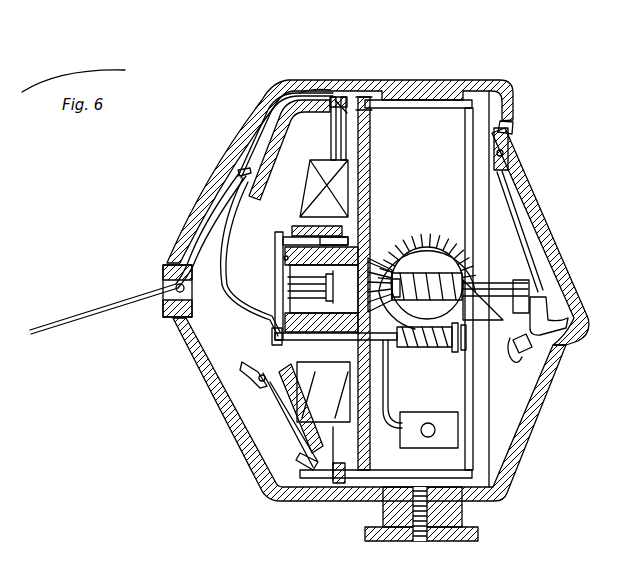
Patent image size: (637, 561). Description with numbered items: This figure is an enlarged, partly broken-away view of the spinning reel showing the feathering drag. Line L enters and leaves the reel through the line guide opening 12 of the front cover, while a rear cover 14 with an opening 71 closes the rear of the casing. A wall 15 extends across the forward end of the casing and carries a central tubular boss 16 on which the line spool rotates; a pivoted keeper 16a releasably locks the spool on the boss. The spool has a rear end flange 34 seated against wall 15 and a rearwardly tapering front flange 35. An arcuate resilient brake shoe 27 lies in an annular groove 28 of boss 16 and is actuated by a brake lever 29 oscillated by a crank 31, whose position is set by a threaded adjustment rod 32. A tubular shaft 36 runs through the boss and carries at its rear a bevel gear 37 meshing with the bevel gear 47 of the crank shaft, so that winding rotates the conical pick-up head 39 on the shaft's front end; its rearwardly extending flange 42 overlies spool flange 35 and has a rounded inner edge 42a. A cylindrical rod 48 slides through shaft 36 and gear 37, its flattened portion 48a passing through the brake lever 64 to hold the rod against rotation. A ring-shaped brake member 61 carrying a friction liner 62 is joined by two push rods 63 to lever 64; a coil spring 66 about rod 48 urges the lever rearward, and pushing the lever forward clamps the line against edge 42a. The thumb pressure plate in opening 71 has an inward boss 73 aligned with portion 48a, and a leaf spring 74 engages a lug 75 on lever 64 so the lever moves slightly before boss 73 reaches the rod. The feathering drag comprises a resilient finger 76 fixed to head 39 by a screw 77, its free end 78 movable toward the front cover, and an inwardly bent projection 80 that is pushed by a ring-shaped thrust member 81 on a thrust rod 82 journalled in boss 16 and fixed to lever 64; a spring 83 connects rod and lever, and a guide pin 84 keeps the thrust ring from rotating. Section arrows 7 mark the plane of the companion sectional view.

The section line 7- 7 is at (266, 228).
The line guide opening 12 is at (543, 197).
The rear cover 14 is at (500, 80).
The wall 15 is at (365, 143).
The tubular boss 16 is at (347, 187).
The pivoted keeper 16a is at (286, 230).
The arcuate resilient brake shoe 27 is at (350, 410).
The annular groove 28 is at (306, 368).
The brake lever 29 is at (389, 372).
The crank 31 is at (457, 420).
The threaded adjustment rod 32 is at (436, 430).
The rear end flange 34 is at (362, 133).
The front flange 35 is at (260, 123).
The tubular shaft 36 is at (321, 289).
The bevel gear 37 is at (372, 262).
The pick-up head 39 is at (263, 110).
The rearwardly extending flange 42 is at (303, 96).
The rounded inner edge 42a is at (322, 98).
The bevel gear 47 is at (392, 272).
The cylindrical rod 48 is at (296, 290).
The flattened portion 48a is at (503, 290).
The ring-shaped brake member 61 is at (337, 100).
The liner 62 is at (341, 103).
The push rods 63 is at (442, 100).
The brake lever 64 is at (468, 152).
The coil spring 66 is at (418, 236).
The opening 71 is at (512, 124).
The boss 73 is at (560, 298).
The leaf spring 74 is at (523, 220).
The lug 75 is at (522, 355).
The resilient finger 76 is at (213, 220).
The screw 77 is at (262, 383).
The free end 78 is at (238, 170).
The projection 80 is at (262, 320).
The ring-shaped thrust member 81 is at (276, 238).
The thrust rod 82 is at (281, 345).
The spring 83 is at (433, 347).
The guide pin 84 is at (284, 258).
The line L is at (53, 331).